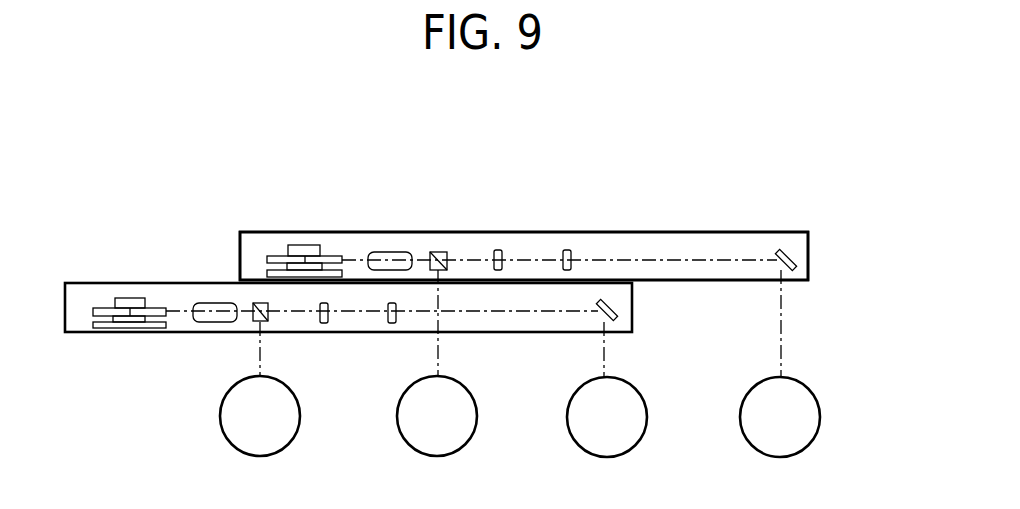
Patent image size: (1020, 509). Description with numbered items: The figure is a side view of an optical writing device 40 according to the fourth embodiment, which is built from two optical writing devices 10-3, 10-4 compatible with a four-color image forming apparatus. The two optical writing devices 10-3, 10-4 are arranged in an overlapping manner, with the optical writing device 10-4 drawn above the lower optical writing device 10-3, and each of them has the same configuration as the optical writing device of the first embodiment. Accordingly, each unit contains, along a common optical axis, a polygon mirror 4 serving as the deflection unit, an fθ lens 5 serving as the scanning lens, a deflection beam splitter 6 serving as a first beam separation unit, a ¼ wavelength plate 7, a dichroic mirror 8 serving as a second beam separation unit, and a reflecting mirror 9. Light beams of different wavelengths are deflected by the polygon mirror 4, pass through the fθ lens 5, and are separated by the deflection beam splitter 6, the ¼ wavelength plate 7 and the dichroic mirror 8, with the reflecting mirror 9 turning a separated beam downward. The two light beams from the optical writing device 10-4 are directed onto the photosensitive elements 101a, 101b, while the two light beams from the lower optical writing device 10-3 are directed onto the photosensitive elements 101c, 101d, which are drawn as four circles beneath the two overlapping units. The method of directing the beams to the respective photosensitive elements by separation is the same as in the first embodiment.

The polygon mirror 4 is at (112, 301).
The fθ lens 5 is at (212, 303).
The deflection beam splitter 6 is at (266, 322).
The ¼ wavelength plate 7 is at (326, 324).
The dichroic mirror 8 is at (393, 324).
The reflecting mirror 9 is at (614, 312).
The optical writing device 40 is at (320, 203).
The optical writing device 10-3 is at (164, 262).
The optical writing device 10-4 is at (532, 203).
The photosensitive element 101a is at (820, 414).
The photosensitive element 101b is at (477, 413).
The photosensitive element 101c is at (300, 413).
The photosensitive element 101d is at (647, 414).